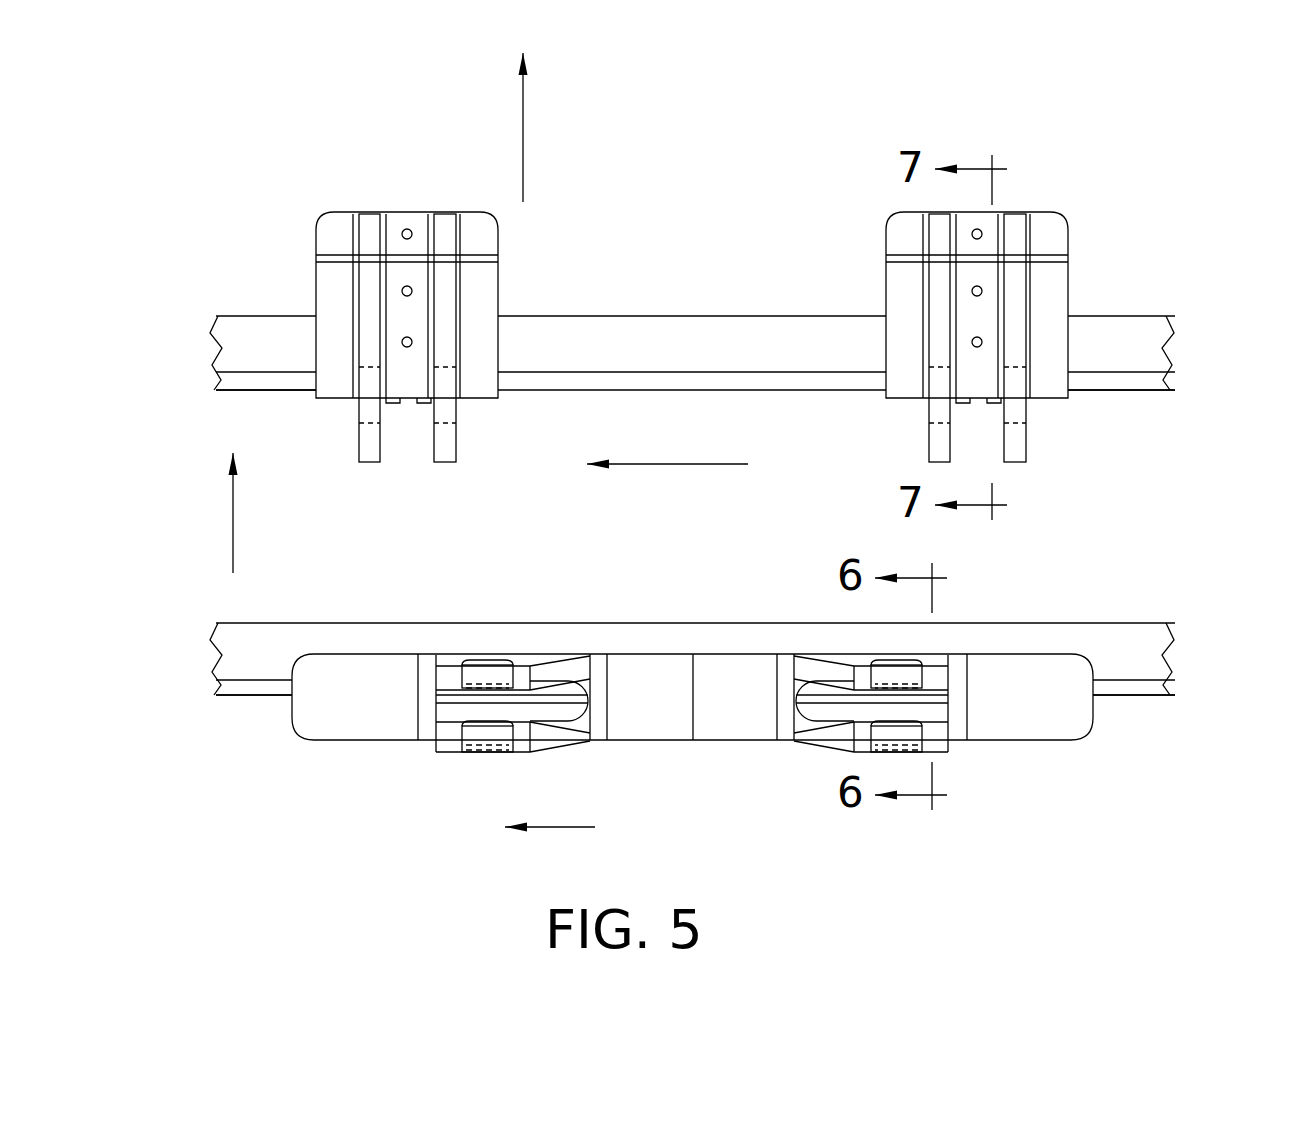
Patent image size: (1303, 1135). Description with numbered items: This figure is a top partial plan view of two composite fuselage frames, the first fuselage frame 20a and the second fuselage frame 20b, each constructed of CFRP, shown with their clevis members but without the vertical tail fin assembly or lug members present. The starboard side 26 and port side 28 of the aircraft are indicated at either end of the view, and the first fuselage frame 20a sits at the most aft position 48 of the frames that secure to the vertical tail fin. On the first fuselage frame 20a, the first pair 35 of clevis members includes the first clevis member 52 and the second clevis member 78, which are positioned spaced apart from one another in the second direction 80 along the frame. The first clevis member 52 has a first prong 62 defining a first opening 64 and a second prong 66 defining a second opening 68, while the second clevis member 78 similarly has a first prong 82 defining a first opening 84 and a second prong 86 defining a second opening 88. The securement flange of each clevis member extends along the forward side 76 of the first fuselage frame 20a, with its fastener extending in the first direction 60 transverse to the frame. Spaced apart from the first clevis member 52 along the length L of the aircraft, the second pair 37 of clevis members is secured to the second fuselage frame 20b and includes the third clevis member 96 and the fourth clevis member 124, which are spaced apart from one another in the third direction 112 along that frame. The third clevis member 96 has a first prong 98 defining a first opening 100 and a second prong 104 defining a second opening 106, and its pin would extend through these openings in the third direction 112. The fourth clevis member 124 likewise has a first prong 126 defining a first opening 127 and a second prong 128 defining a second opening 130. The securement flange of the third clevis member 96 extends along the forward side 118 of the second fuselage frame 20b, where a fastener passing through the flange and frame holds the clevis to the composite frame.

The first fuselage frame 20a is at (258, 652).
The second fuselage frame 20b is at (256, 332).
The starboard side 26 is at (1238, 541).
The port side 28 is at (110, 541).
The first pair of clevis members 35 is at (750, 822).
The second pair of clevis members 37 is at (748, 152).
The most aft position 48 is at (688, 813).
The first clevis member 52 is at (958, 765).
The first direction 60 is at (233, 520).
The first prong 62 is at (828, 735).
The first opening 64 is at (878, 737).
The second prong 66 is at (933, 680).
The second opening 68 is at (888, 650).
The forward side 76 is at (268, 704).
The second clevis member 78 is at (418, 746).
The second direction 80 is at (588, 829).
The first prong 82 is at (548, 735).
The first opening 84 is at (468, 760).
The second prong 86 is at (545, 677).
The second opening 88 is at (482, 652).
The third clevis member 96 is at (1090, 207).
The first prong 98 is at (1016, 302).
The first opening 100 is at (1018, 403).
The second prong 104 is at (943, 243).
The second opening 106 is at (918, 411).
The third direction 112 is at (663, 466).
The forward side 118 is at (272, 393).
The fourth clevis member 124 is at (293, 207).
The first prong 126 is at (444, 275).
The first opening 127 is at (447, 413).
The second prong 128 is at (368, 260).
The second opening 130 is at (358, 412).
The length L is at (523, 131).